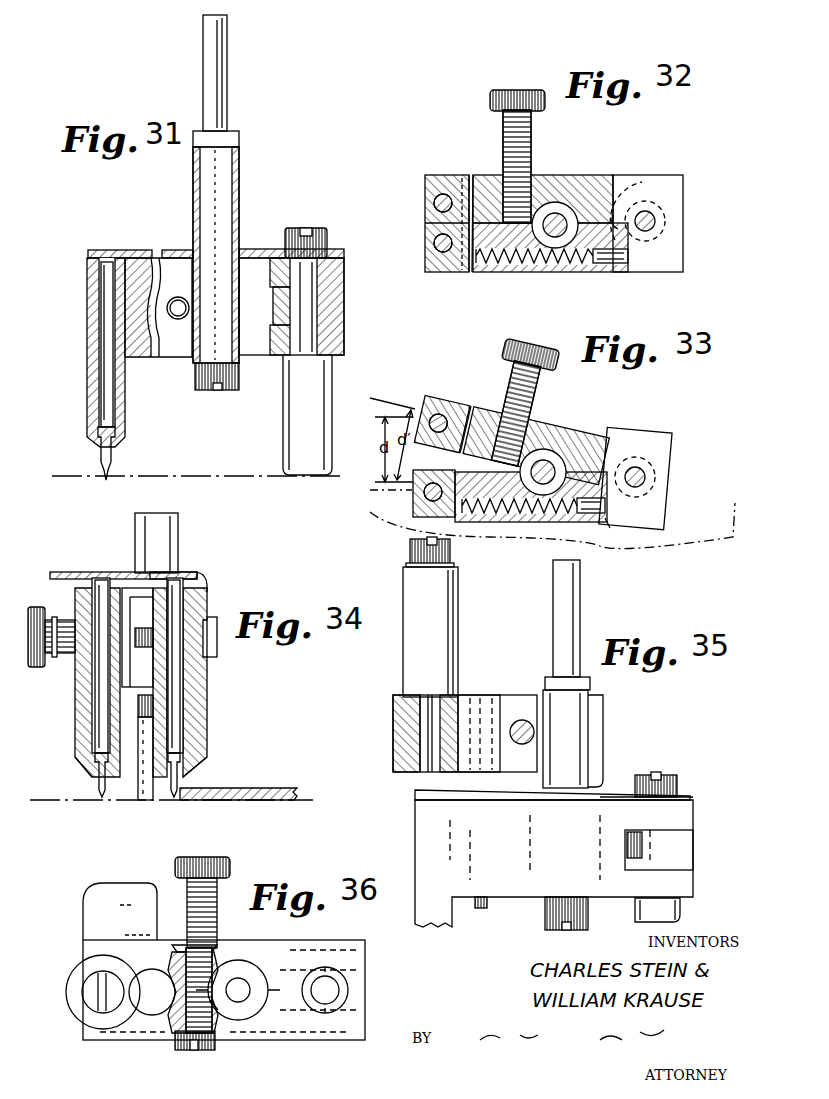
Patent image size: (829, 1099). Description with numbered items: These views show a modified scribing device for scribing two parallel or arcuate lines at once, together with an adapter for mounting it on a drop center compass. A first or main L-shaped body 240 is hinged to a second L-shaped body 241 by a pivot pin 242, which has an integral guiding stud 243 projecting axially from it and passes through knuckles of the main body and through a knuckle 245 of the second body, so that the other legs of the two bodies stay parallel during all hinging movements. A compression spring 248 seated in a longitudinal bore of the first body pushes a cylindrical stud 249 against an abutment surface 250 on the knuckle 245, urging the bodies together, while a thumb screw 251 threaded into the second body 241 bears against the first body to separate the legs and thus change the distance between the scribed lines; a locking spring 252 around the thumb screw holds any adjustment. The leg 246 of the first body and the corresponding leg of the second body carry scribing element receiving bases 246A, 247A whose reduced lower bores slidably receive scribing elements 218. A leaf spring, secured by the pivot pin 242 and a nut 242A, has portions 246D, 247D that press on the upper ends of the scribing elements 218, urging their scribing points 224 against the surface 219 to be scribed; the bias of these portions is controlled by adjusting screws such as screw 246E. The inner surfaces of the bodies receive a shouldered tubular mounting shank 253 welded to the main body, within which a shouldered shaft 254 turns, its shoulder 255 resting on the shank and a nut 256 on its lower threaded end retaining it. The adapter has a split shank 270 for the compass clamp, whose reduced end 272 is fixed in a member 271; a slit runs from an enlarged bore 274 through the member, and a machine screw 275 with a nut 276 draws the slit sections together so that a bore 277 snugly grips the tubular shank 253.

In FIG. 31, the scribing element 218 is at (103, 388).
In FIG. 32, the scribing element 218 is at (436, 203).
In FIG. 33, the scribing element 218 is at (440, 430).
In FIG. 34, the scribing element 218 is at (100, 700).
In FIG. 31, the surface to be scribed 219 is at (213, 476).
In FIG. 34, the surface to be scribed 219 is at (50, 802).
In FIG. 34, the scribing point 224 is at (102, 798).
In FIG. 32, the first L-shaped body 240 is at (475, 268).
In FIG. 33, the first L-shaped body 240 is at (415, 512).
In FIG. 35, the first L-shaped body 240 is at (425, 833).
In FIG. 31, the second L-shaped body 241 is at (170, 266).
In FIG. 32, the second L-shaped body 241 is at (487, 183).
In FIG. 33, the second L-shaped body 241 is at (463, 399).
In FIG. 31, the pivot pin 242 is at (310, 298).
In FIG. 32, the pivot pin 242 is at (655, 221).
In FIG. 33, the pivot pin 242 is at (645, 474).
In FIG. 36, the pivot pin 242 is at (340, 992).
In FIG. 31, the nut 242A is at (316, 228).
In FIG. 35, the nut 242A is at (668, 775).
In FIG. 36, the nut 242A is at (333, 978).
In FIG. 31, the guiding stud 243 is at (297, 422).
In FIG. 34, the guiding stud 243 is at (155, 795).
In FIG. 35, the guiding stud 243 is at (681, 907).
In FIG. 32, the knuckle 245 is at (673, 253).
In FIG. 33, the knuckle 245 is at (660, 488).
In FIG. 31, the leg of first L-shaped body 246 is at (333, 252).
In FIG. 35, the leg of first L-shaped body 246 is at (688, 797).
In FIG. 34, the scribing element receiving base 246A is at (196, 766).
In FIG. 34, the leaf spring portion 246D is at (196, 574).
In FIG. 35, the leaf spring portion 246D is at (415, 793).
In FIG. 36, the leaf spring portion 246D is at (102, 1038).
In FIG. 35, the adjusting screw 246E is at (482, 909).
In FIG. 34, the scribing element receiving base 247A is at (95, 763).
In FIG. 34, the leaf spring portion 247D is at (95, 575).
In FIG. 36, the leaf spring portion 247D is at (90, 909).
In FIG. 32, the compression spring 248 is at (556, 265).
In FIG. 33, the compression spring 248 is at (508, 523).
In FIG. 32, the cylindrical stud 249 is at (626, 268).
In FIG. 33, the cylindrical stud 249 is at (602, 520).
In FIG. 35, the cylindrical stud 249 is at (638, 845).
In FIG. 33, the abutment surface 250 is at (606, 523).
In FIG. 31, the thumb screw 251 is at (178, 320).
In FIG. 32, the thumb screw 251 is at (534, 90).
In FIG. 33, the thumb screw 251 is at (542, 350).
In FIG. 32, the locking spring 252 is at (529, 141).
In FIG. 31, the shouldered tubular mounting shank 253 is at (235, 183).
In FIG. 32, the shouldered tubular mounting shank 253 is at (552, 203).
In FIG. 33, the shouldered tubular mounting shank 253 is at (543, 449).
In FIG. 34, the shouldered tubular mounting shank 253 is at (173, 535).
In FIG. 35, the shouldered tubular mounting shank 253 is at (587, 750).
In FIG. 31, the shouldered shaft 254 is at (216, 113).
In FIG. 32, the shouldered shaft 254 is at (570, 216).
In FIG. 33, the shouldered shaft 254 is at (552, 459).
In FIG. 35, the shouldered shaft 254 is at (572, 607).
In FIG. 36, the shouldered shaft 254 is at (240, 984).
In FIG. 31, the shoulder 255 is at (239, 139).
In FIG. 35, the shoulder 255 is at (590, 682).
In FIG. 36, the shoulder 255 is at (253, 982).
In FIG. 31, the nut 256 is at (196, 384).
In FIG. 35, the nut 256 is at (555, 923).
In FIG. 35, the split shank 270 is at (450, 618).
In FIG. 36, the split shank 270 is at (93, 983).
In FIG. 35, the member 271 is at (395, 738).
In FIG. 35, the reduced end 272 is at (402, 712).
In FIG. 35, the enlarged bore 274 is at (478, 705).
In FIG. 36, the enlarged bore 274 is at (150, 1014).
In FIG. 35, the machine screw 275 is at (522, 720).
In FIG. 36, the machine screw 275 is at (213, 1008).
In FIG. 36, the nut 276 is at (205, 1051).
In FIG. 36, the bore 277 is at (230, 973).